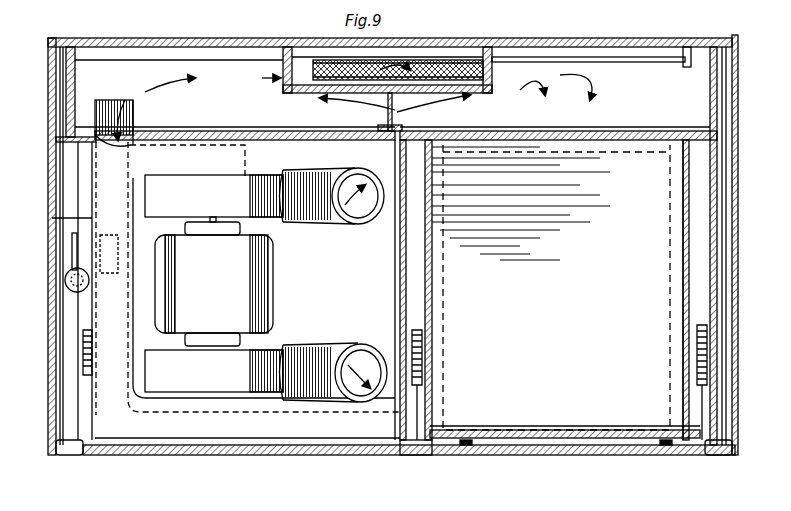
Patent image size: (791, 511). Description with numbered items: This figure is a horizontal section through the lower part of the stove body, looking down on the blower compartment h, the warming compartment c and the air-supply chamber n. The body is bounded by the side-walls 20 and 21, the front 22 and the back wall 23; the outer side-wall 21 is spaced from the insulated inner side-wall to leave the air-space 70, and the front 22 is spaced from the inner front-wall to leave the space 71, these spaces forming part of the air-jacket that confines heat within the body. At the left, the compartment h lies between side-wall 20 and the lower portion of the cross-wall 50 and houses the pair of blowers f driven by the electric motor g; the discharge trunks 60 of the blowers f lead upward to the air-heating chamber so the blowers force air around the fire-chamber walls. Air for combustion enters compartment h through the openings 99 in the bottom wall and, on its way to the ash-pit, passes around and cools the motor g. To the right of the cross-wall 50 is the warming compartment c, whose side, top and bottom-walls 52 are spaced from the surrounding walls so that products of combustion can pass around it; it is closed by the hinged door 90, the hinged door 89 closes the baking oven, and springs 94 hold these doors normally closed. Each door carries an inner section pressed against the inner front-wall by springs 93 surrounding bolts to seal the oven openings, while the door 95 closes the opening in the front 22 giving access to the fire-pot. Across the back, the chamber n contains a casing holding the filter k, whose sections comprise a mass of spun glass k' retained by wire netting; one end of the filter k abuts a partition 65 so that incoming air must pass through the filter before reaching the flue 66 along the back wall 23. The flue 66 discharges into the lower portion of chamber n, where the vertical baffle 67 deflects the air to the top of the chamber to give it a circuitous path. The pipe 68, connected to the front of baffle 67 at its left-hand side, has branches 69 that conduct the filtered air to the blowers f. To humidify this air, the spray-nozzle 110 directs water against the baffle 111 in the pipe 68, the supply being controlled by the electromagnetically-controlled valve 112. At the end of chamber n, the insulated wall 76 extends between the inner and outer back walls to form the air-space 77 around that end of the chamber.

The side-wall 21 is at (738, 190).
The back wall 23 is at (570, 38).
The partition 65 is at (312, 47).
The filter k is at (398, 45).
The spun glass k' is at (489, 41).
The vertical baffle 67 is at (392, 108).
The flue 66 is at (646, 62).
The chamber n is at (645, 103).
The branches 69 is at (283, 72).
The blowers f is at (214, 283).
The electric motor g is at (273, 284).
The compartment h is at (368, 290).
The discharge trunks 60 is at (352, 348).
The inner cross-wall 50 is at (356, 215).
The warming compartment c is at (551, 287).
The walls 52 is at (683, 261).
The springs 94 is at (560, 140).
The pipe 68 is at (107, 281).
The insulated wall 76 is at (60, 97).
The air-space 77 is at (66, 117).
The baffle 111 is at (51, 219).
The openings 99 is at (72, 243).
The spray-nozzle 110 is at (66, 264).
The electromagnetically-controlled valve 112 is at (65, 281).
The side-wall 20 is at (50, 377).
The door 95 is at (182, 455).
The hinged door 89 is at (565, 453).
The space 71 is at (496, 448).
The hinged door 90 is at (555, 426).
The springs 93 is at (466, 448).
The front 22 is at (68, 455).
The space 70 is at (720, 380).